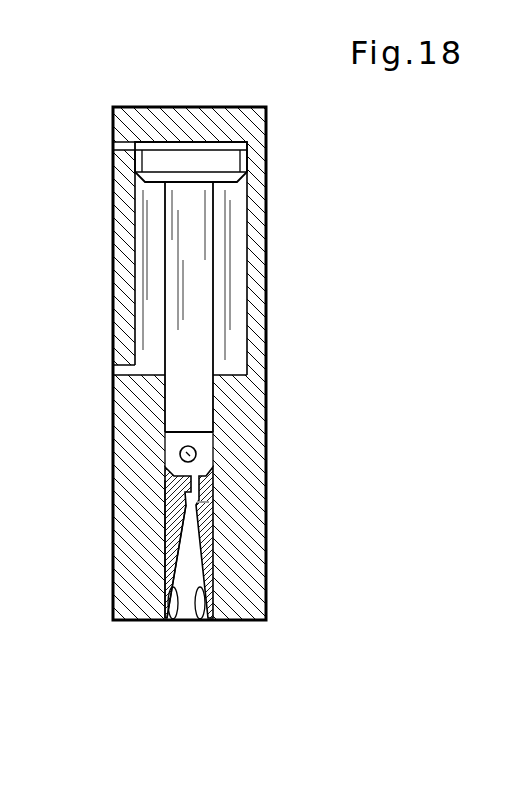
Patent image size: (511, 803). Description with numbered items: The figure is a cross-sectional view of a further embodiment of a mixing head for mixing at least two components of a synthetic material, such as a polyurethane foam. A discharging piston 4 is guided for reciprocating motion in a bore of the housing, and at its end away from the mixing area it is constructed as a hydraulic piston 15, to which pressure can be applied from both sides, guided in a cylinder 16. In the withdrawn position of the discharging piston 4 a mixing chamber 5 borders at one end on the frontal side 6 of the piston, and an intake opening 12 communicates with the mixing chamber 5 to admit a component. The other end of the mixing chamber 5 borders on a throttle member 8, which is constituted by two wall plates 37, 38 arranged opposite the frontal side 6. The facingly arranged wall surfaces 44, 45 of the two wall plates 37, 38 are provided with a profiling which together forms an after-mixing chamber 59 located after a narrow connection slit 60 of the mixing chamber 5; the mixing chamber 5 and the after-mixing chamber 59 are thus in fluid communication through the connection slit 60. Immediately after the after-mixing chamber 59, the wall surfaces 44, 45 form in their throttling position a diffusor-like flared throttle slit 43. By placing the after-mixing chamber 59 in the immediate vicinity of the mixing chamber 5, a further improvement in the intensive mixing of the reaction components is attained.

The hydraulic piston 15 is at (232, 163).
The cylinder 16 is at (228, 262).
The discharging piston 4 is at (197, 338).
The frontal side 6 is at (199, 430).
The mixing chamber 5 is at (181, 448).
The intake opening 12 is at (178, 461).
The throttle member 8 is at (158, 514).
The connection slit 60 is at (205, 487).
The after-mixing chamber 59 is at (207, 507).
The wall plate 37 is at (203, 553).
The throttle slit 43 is at (178, 575).
The wall plate 38 is at (163, 588).
The wall surface 45 is at (170, 621).
The wall surface 44 is at (205, 619).